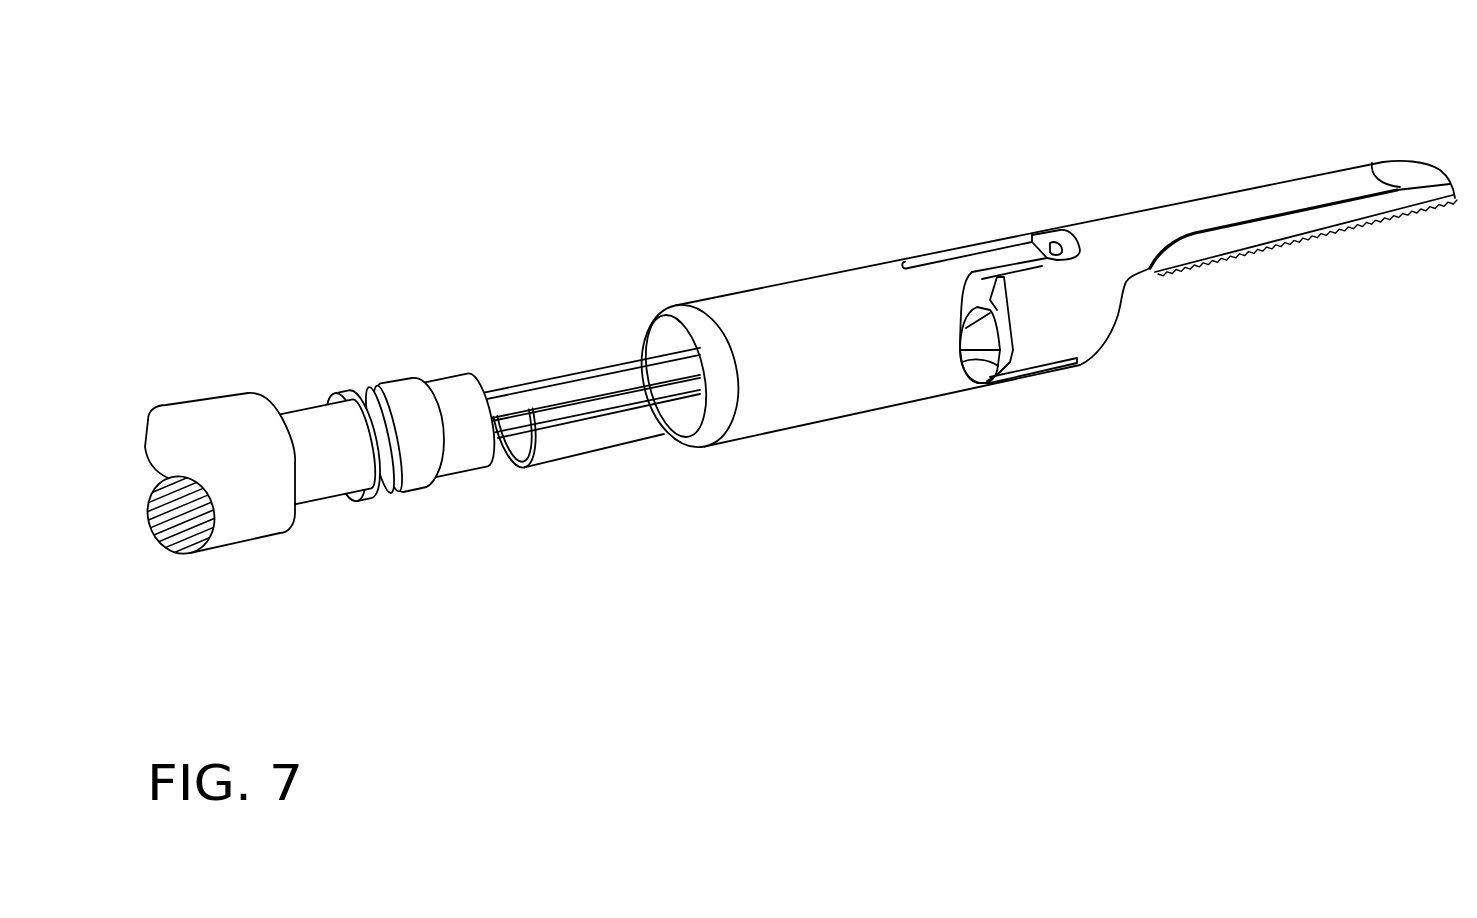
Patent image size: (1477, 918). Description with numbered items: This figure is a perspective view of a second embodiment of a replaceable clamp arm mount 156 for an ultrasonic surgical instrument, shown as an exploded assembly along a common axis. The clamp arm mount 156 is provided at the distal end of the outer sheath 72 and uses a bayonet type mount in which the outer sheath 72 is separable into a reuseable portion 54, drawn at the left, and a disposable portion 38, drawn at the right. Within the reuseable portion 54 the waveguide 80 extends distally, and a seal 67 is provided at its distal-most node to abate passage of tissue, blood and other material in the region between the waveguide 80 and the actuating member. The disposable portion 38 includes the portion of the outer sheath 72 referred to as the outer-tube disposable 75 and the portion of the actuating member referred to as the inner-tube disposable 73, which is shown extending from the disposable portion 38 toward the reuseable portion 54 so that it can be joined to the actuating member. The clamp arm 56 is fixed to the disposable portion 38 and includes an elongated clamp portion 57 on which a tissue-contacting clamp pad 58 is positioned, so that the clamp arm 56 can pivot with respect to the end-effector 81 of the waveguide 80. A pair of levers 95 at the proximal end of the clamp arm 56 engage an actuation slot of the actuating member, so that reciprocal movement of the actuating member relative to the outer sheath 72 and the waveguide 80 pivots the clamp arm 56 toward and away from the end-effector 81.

The clamp arm mount 156 is at (952, 125).
The disposable portion 38 is at (1455, 487).
The reuseable portion 54 is at (493, 595).
The clamp arm 56 is at (1178, 177).
The elongated clamp portion 57 is at (1253, 200).
The tissue-contacting clamp pad 58 is at (1335, 235).
The seal 67 is at (412, 410).
The outer sheath 72 is at (242, 415).
The inner-tube disposable 73 is at (602, 442).
The outer-tube disposable 75 is at (823, 292).
The waveguide 80 is at (318, 480).
The end-effector 81 is at (577, 392).
The levers 95 is at (1063, 322).